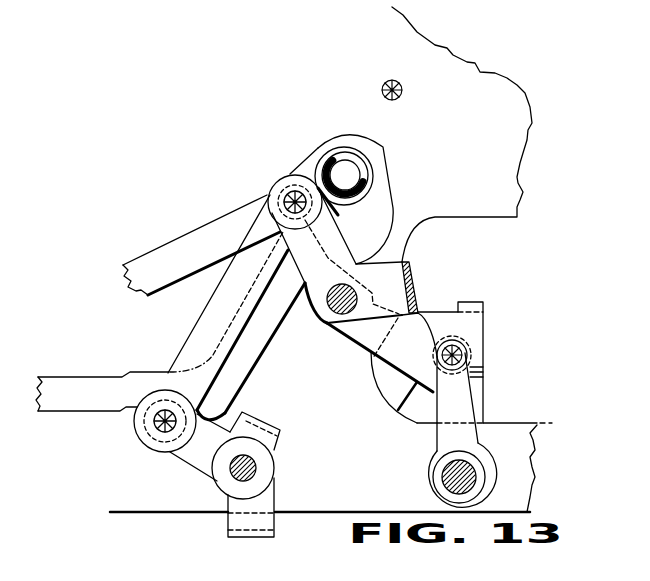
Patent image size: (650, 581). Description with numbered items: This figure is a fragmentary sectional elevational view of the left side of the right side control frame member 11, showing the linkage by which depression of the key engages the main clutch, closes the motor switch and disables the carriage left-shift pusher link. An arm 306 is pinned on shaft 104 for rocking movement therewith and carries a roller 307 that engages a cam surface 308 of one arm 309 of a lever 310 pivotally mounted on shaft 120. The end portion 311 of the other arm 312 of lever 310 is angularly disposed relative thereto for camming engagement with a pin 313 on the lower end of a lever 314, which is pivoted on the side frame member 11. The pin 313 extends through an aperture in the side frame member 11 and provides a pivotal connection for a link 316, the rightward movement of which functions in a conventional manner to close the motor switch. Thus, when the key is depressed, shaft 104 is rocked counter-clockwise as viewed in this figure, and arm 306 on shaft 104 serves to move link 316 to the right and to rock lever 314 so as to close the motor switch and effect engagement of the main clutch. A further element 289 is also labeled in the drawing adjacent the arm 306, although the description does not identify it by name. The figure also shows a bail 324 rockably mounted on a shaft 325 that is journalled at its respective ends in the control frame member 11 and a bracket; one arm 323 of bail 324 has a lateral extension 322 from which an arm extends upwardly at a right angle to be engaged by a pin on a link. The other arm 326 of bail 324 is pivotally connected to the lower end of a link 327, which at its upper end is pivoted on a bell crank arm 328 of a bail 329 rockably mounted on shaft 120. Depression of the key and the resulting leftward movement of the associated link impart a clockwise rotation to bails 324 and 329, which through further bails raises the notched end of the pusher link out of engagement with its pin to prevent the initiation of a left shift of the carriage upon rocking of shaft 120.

The side frame member 11 is at (364, 459).
The shaft 104 is at (445, 479).
The shaft 120 is at (336, 318).
The adjustment screw 289 is at (473, 375).
The arm 306 is at (467, 403).
The roller 307 is at (463, 351).
The cam surface 308 is at (434, 335).
The arm of lever 309 is at (421, 332).
The lever 310 is at (380, 338).
The end portion 311 is at (308, 160).
The arm of lever 312 is at (335, 256).
The pin 313 is at (352, 175).
The lever 314 is at (375, 151).
The link 316 is at (88, 380).
The lateral extension 322 is at (277, 534).
The arm of bail 323 is at (270, 497).
The bail 324 is at (262, 420).
The shaft 325 is at (258, 467).
The arm of bail 326 is at (196, 457).
The link 327 is at (222, 303).
The bell crank arm 328 is at (311, 297).
The bail 329 is at (411, 266).